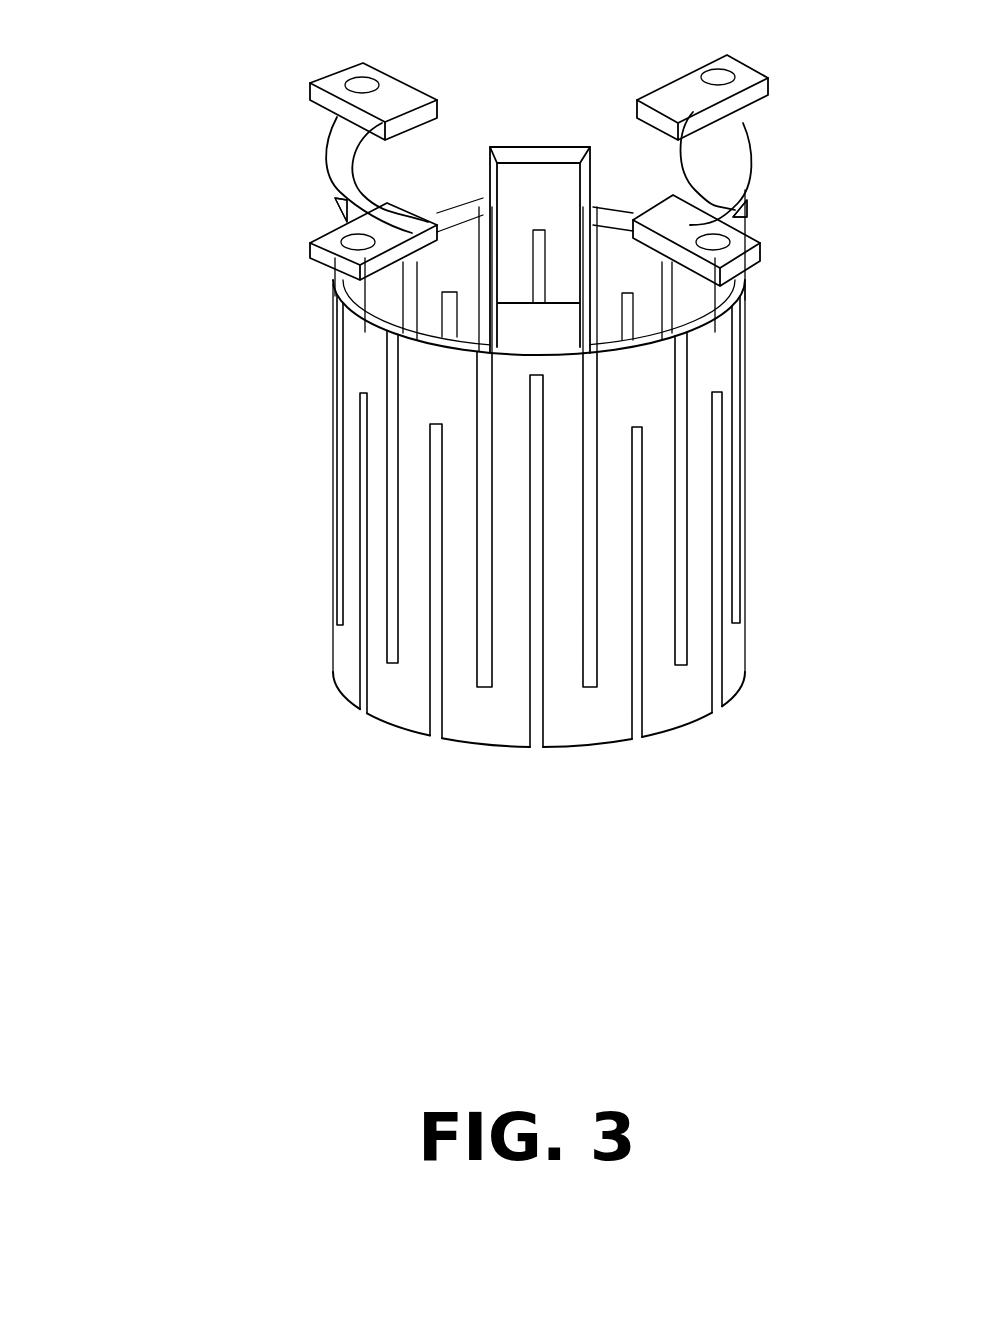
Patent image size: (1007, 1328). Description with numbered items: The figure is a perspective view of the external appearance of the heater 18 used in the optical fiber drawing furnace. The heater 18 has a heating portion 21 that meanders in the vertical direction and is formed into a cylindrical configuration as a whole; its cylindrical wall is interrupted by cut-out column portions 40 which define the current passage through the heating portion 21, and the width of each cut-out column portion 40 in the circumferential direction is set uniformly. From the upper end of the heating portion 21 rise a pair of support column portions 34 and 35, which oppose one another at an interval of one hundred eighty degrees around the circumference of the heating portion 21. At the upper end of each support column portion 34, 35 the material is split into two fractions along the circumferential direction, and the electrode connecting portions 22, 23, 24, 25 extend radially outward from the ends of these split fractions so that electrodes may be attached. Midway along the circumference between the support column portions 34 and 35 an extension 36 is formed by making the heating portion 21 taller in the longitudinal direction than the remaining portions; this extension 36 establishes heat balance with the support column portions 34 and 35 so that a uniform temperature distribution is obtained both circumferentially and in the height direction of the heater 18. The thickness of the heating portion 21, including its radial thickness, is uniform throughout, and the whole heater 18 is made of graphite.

The heater 18 is at (200, 455).
The heating portion 21 is at (420, 580).
The electrode connecting portion 22 is at (753, 72).
The electrode connecting portion 23 is at (763, 257).
The electrode connecting portion 24 is at (340, 230).
The electrode connecting portion 25 is at (400, 93).
The support column portion 34 is at (730, 218).
The support column portion 35 is at (333, 210).
The extension 36 is at (540, 180).
The cut-out column portion 40 is at (690, 566).